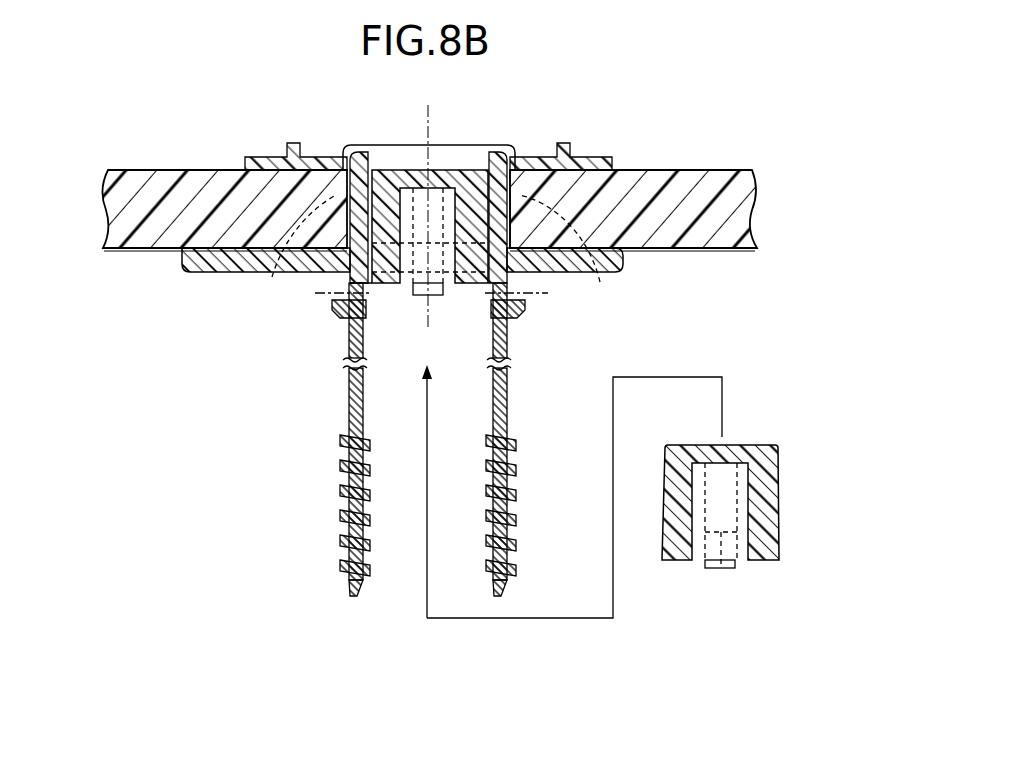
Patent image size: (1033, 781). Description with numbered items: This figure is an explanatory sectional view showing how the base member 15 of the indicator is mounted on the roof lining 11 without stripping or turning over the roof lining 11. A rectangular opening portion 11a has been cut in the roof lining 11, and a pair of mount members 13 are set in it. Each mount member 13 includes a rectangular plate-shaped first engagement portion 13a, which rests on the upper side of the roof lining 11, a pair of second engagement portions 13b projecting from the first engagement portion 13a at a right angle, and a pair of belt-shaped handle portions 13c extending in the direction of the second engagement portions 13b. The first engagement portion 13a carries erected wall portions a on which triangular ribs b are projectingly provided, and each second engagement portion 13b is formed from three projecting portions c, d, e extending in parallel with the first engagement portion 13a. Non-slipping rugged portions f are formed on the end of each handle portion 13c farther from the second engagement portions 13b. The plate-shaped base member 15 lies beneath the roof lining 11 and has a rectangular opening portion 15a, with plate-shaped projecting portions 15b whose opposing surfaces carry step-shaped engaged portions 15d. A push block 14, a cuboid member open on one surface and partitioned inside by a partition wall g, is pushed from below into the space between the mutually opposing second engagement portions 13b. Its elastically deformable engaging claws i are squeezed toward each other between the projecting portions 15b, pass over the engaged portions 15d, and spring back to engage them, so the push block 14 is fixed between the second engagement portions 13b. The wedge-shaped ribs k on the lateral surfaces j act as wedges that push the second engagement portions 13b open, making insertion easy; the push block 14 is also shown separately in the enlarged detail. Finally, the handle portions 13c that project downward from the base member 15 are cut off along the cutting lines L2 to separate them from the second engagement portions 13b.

The roof lining 11 is at (683, 167).
The rectangular opening portion 11a is at (501, 162).
The mount member 13 is at (428, 343).
The first engagement portion 13a is at (323, 156).
The second engagement portion 13b is at (366, 300).
The handle portion 13c is at (350, 405).
The push block 14 is at (418, 164).
The base member 15 is at (225, 278).
The rectangular opening portion 15a is at (428, 297).
The projecting portion 15b is at (388, 150).
The step-shaped engaged portion 15d is at (371, 288).
The erected wall portion a is at (429, 210).
The triangular rib b is at (436, 250).
The projecting portion c is at (338, 251).
The projecting portion d is at (338, 272).
The projecting portion e is at (338, 303).
The non-slipping rugged portion f is at (340, 567).
The partition wall g is at (438, 196).
The engaging claw i is at (420, 270).
The lateral surface j is at (358, 155).
The wedge-shaped rib k is at (372, 245).
The cutting line L2 is at (327, 298).